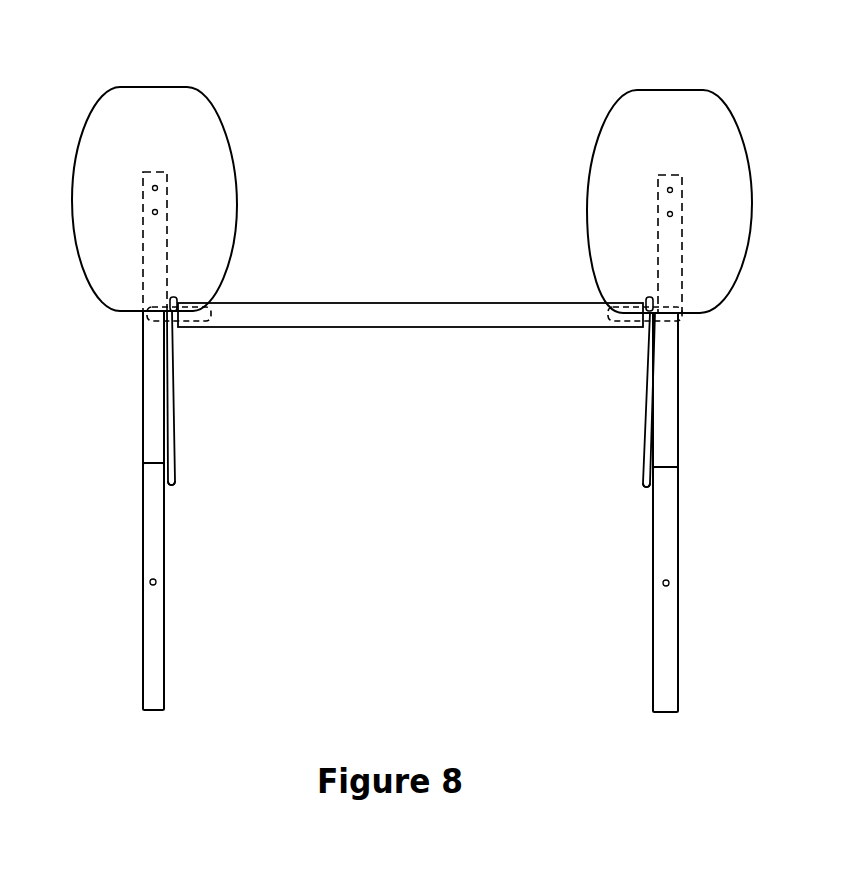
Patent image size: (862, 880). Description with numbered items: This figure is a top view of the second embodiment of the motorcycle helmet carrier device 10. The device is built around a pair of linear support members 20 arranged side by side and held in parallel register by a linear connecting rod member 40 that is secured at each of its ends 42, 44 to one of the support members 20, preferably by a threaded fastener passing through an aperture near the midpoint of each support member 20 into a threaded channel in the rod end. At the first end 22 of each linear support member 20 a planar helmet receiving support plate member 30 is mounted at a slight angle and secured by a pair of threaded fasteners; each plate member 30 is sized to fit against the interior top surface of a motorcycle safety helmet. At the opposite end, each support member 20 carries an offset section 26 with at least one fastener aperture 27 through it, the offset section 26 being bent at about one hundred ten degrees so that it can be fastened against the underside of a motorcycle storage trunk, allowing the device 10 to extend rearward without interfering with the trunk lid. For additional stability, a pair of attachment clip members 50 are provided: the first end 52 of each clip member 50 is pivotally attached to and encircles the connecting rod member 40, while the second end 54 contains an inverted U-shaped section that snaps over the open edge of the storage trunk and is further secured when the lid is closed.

The motorcycle helmet carrier device 10 is at (441, 114).
The linear support member 20 is at (152, 401).
The first end 22 is at (167, 230).
The offset section 26 is at (152, 545).
The fastener aperture 27 is at (156, 582).
The helmet receiving support plate member 30 is at (202, 127).
The linear connecting rod member 40 is at (373, 303).
The end of connecting rod member 42 is at (200, 303).
The end of connecting rod member 44 is at (598, 303).
The attachment clip member 50 is at (176, 415).
The first end of attachment clip member 52 is at (178, 318).
The second end of attachment clip member 54 is at (178, 480).